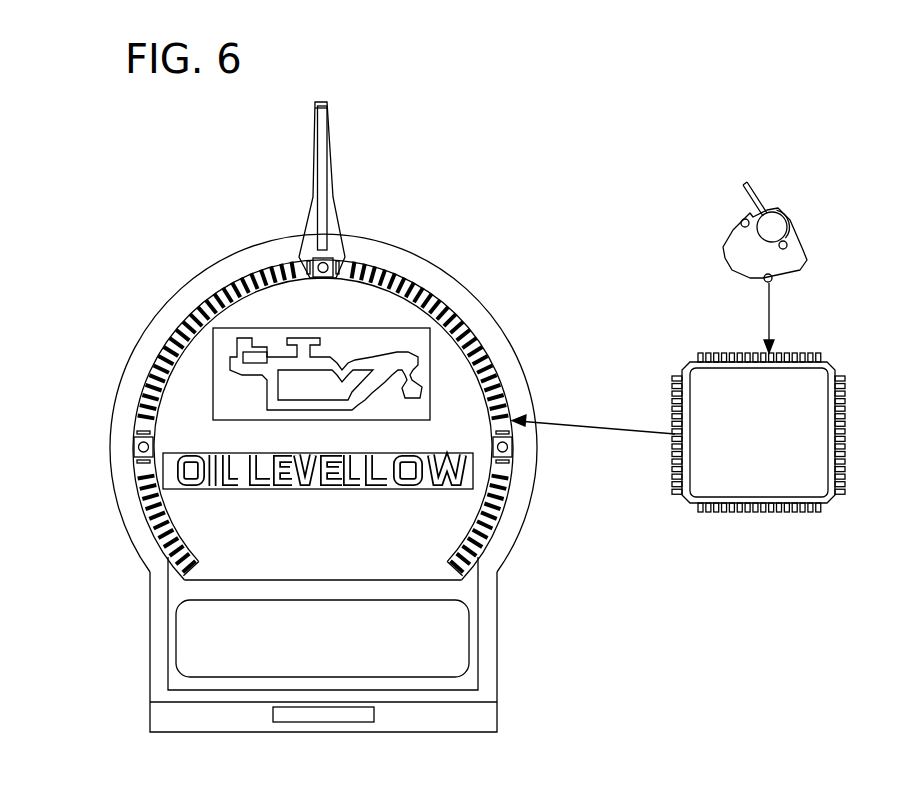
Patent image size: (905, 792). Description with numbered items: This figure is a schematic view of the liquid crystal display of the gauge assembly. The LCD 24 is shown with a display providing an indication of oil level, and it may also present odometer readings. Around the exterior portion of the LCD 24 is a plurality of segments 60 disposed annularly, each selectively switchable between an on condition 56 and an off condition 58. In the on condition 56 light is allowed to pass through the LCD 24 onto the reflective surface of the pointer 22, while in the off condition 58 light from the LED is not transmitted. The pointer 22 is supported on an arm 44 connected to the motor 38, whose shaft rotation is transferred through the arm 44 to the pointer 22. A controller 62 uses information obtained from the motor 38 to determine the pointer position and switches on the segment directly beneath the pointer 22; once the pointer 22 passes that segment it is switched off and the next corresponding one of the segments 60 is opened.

The pointer 22 is at (331, 160).
The LCD 24 is at (286, 417).
The motor 38 is at (790, 262).
The arm 44 is at (762, 196).
The on condition 56 is at (343, 277).
The off condition 58 is at (378, 276).
The segments 60 is at (467, 272).
The controller 62 is at (770, 487).